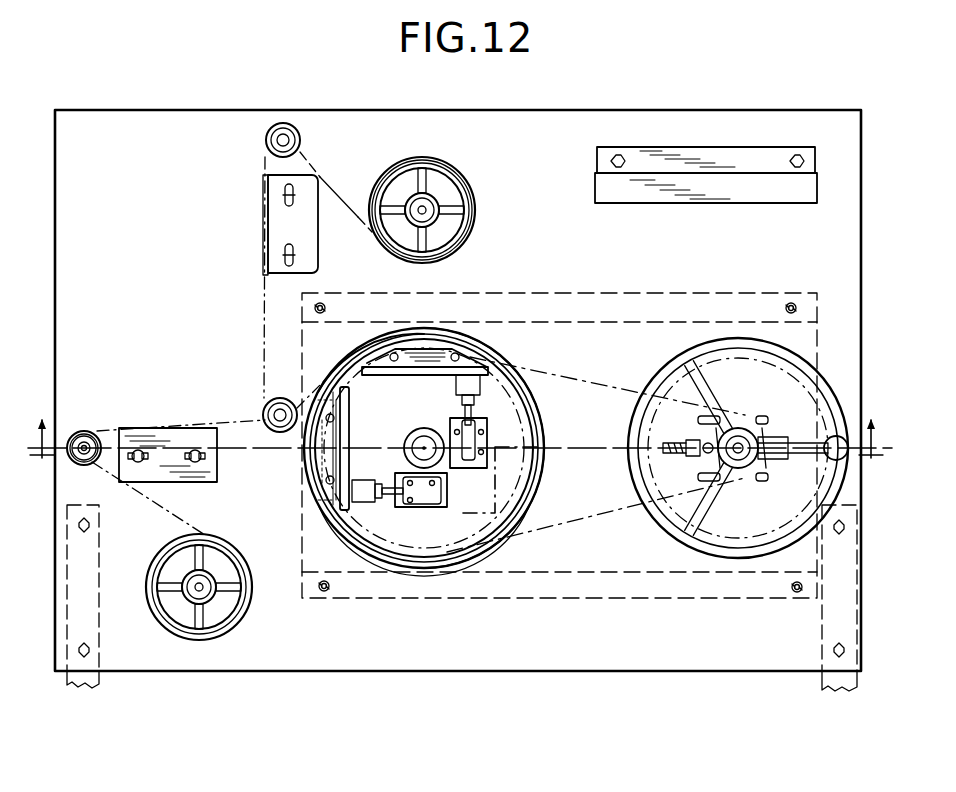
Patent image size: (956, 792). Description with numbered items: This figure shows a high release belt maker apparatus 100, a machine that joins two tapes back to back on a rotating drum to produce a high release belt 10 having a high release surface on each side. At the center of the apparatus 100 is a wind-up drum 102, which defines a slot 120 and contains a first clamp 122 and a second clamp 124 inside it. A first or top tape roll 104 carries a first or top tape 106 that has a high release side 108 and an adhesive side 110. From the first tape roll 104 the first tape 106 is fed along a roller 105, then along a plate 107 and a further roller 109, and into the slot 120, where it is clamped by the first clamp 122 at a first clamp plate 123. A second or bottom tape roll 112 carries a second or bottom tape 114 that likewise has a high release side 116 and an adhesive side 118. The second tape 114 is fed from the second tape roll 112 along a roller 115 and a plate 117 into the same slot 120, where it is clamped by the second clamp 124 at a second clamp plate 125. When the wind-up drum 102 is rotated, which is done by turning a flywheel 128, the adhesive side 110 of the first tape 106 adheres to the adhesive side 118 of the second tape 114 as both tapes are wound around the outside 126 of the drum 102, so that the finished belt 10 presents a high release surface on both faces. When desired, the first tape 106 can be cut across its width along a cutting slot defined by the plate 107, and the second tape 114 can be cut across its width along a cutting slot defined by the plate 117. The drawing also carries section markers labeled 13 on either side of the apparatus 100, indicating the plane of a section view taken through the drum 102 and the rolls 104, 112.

The high release belt 10 is at (537, 492).
The section line 13- 13 is at (460, 420).
The high release belt maker apparatus 100 is at (158, 106).
The wind-up drum 102 is at (425, 556).
The first or top tape roll 104 is at (478, 225).
The roller 105 is at (267, 141).
The first or top tape 106 is at (338, 192).
The plate 107 is at (266, 250).
The high release side 108 is at (358, 220).
The roller 109 is at (265, 410).
The adhesive side 110 is at (390, 172).
The second or bottom tape roll 112 is at (215, 622).
The second or bottom tape 114 is at (152, 502).
The roller 115 is at (88, 432).
The high release side 116 is at (185, 515).
The plate 117 is at (198, 433).
The adhesive side 118 is at (94, 466).
The slot 120 is at (342, 376).
The first clamp 122 is at (470, 402).
The first clamp plate 123 is at (385, 376).
The second clamp 124 is at (358, 505).
The second clamp plate 125 is at (373, 445).
The outside 126 is at (470, 548).
The flywheel 128 is at (660, 522).